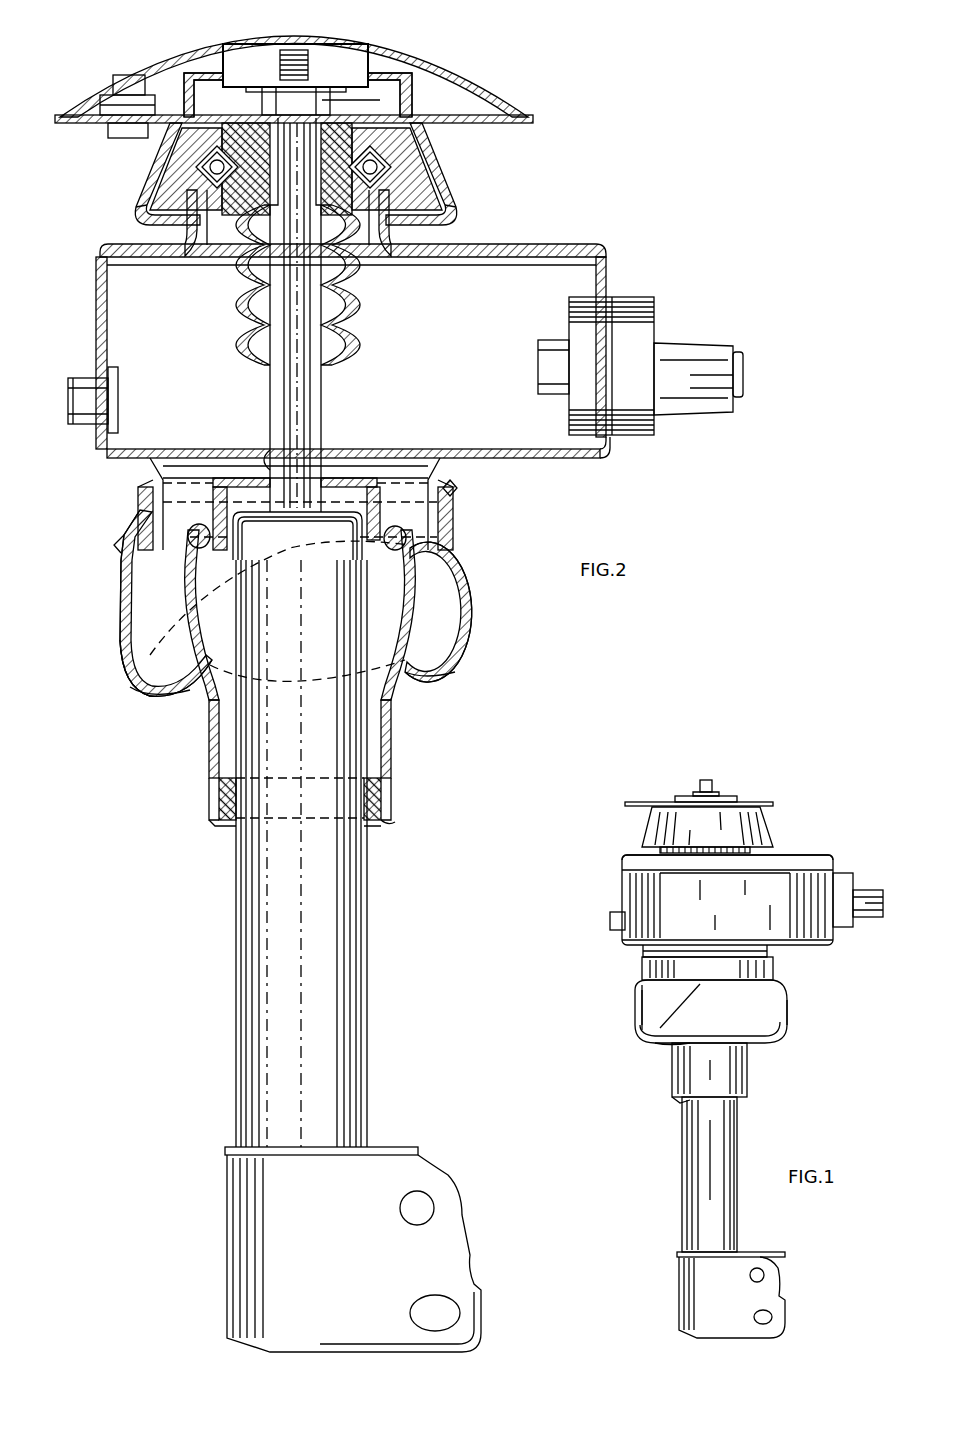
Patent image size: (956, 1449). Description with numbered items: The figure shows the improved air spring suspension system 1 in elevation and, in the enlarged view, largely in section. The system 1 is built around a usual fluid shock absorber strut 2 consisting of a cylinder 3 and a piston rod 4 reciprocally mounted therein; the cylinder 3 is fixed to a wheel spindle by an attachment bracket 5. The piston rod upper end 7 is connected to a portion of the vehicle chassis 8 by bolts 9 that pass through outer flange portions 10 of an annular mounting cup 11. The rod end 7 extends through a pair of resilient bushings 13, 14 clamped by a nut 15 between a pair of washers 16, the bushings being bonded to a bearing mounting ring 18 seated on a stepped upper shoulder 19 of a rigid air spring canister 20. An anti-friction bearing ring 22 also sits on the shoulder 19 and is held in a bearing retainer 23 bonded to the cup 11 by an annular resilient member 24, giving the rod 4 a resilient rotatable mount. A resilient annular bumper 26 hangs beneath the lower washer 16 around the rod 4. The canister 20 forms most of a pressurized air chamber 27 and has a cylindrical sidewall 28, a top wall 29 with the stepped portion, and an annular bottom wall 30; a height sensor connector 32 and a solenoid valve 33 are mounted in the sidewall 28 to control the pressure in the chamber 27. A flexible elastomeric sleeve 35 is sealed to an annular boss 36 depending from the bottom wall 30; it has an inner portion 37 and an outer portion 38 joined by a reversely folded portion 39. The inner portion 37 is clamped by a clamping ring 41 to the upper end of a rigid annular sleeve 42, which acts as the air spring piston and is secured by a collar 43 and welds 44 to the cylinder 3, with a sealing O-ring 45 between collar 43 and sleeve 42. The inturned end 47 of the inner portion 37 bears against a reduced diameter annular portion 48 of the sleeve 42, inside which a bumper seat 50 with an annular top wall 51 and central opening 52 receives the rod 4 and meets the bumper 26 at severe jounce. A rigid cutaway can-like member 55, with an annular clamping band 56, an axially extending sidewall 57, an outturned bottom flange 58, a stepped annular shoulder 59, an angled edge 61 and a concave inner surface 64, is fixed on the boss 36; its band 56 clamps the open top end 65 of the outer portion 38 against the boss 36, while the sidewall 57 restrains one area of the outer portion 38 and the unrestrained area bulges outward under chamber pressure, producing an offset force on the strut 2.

In FIG. 2, the air spring suspension system 1 is at (602, 204).
In FIG. 1, the air spring suspension system 1 is at (814, 810).
In FIG. 2, the fluid shock absorber strut 2 is at (228, 941).
In FIG. 1, the fluid shock absorber strut 2 is at (704, 1166).
In FIG. 2, the cylinder 3 is at (340, 1012).
In FIG. 1, the cylinder 3 is at (710, 1210).
In FIG. 2, the piston rod 4 is at (297, 428).
In FIG. 2, the attachment bracket 5 is at (420, 1252).
In FIG. 1, the attachment bracket 5 is at (717, 1290).
In FIG. 2, the piston rod upper end 7 is at (297, 135).
In FIG. 2, the vehicle chassis 8 is at (493, 71).
In FIG. 2, the bolts 9 is at (120, 84).
In FIG. 2, the outer flange portions 10 is at (98, 120).
In FIG. 1, the outer flange portions 10 is at (763, 802).
In FIG. 2, the annular mounting cup 11 is at (140, 187).
In FIG. 1, the annular mounting cup 11 is at (668, 827).
In FIG. 2, the lower resilient bushing 13 is at (382, 233).
In FIG. 2, the resilient bushing 14 is at (222, 120).
In FIG. 2, the nut 15 is at (318, 103).
In FIG. 1, the nut 15 is at (717, 793).
In FIG. 2, the washers 16 is at (342, 106).
In FIG. 1, the washers 16 is at (687, 797).
In FIG. 2, the bearing mounting ring 18 is at (287, 132).
In FIG. 2, the stepped upper shoulder 19 is at (187, 173).
In FIG. 2, the rigid air spring canister 20 is at (540, 230).
In FIG. 1, the rigid air spring canister 20 is at (814, 846).
In FIG. 2, the anti-friction bearing ring 22 is at (393, 160).
In FIG. 2, the bearing retainer 23 is at (403, 168).
In FIG. 2, the annular resilient member 24 is at (428, 188).
In FIG. 2, the resilient annular bumper 26 is at (338, 326).
In FIG. 2, the pressurized air chamber 27 is at (498, 410).
In FIG. 2, the cylindrical sidewall 28 is at (100, 322).
In FIG. 1, the cylindrical sidewall 28 is at (740, 904).
In FIG. 2, the top wall 29 is at (133, 243).
In FIG. 1, the top wall 29 is at (640, 855).
In FIG. 2, the annular bottom wall 30 is at (476, 449).
In FIG. 1, the annular bottom wall 30 is at (793, 943).
In FIG. 2, the height sensor connector 32 is at (88, 412).
In FIG. 1, the height sensor connector 32 is at (613, 923).
In FIG. 2, the solenoid valve 33 is at (631, 336).
In FIG. 1, the solenoid valve 33 is at (853, 922).
In FIG. 2, the flexible sleeve 35 is at (494, 628).
In FIG. 1, the flexible sleeve 35 is at (778, 1020).
In FIG. 2, the annular boss 36 is at (178, 470).
In FIG. 1, the annular boss 36 is at (695, 953).
In FIG. 2, the inner portion 37 is at (187, 590).
In FIG. 2, the outer portion 38 is at (137, 594).
In FIG. 1, the outer portion 38 is at (730, 1016).
In FIG. 2, the reversely folded portion 39 is at (134, 690).
In FIG. 1, the reversely folded portion 39 is at (693, 1052).
In FIG. 2, the clamping ring 41 is at (394, 549).
In FIG. 2, the annular sleeve 42 is at (392, 740).
In FIG. 1, the annular sleeve 42 is at (718, 1070).
In FIG. 2, the collar 43 is at (212, 820).
In FIG. 1, the collar 43 is at (690, 1102).
In FIG. 2, the welds 44 is at (383, 822).
In FIG. 2, the sealing O-ring 45 is at (383, 795).
In FIG. 2, the inturned end 47 is at (396, 531).
In FIG. 2, the reduced diameter annular portion 48 is at (201, 531).
In FIG. 2, the bumper seat 50 is at (330, 493).
In FIG. 2, the annular top wall 51 is at (360, 477).
In FIG. 2, the central opening 52 is at (280, 470).
In FIG. 2, the cutaway can-like member 55 is at (125, 518).
In FIG. 1, the cutaway can-like member 55 is at (625, 1010).
In FIG. 2, the annular clamping band 56 is at (454, 514).
In FIG. 1, the annular clamping band 56 is at (640, 973).
In FIG. 2, the sidewall 57 is at (120, 616).
In FIG. 1, the sidewall 57 is at (680, 1010).
In FIG. 2, the outturned bottom flange 58 is at (120, 645).
In FIG. 2, the stepped annular shoulder 59 is at (124, 558).
In FIG. 2, the edge 61 is at (242, 588).
In FIG. 2, the concave inner surface 64 is at (141, 582).
In FIG. 2, the open top end 65 is at (457, 486).